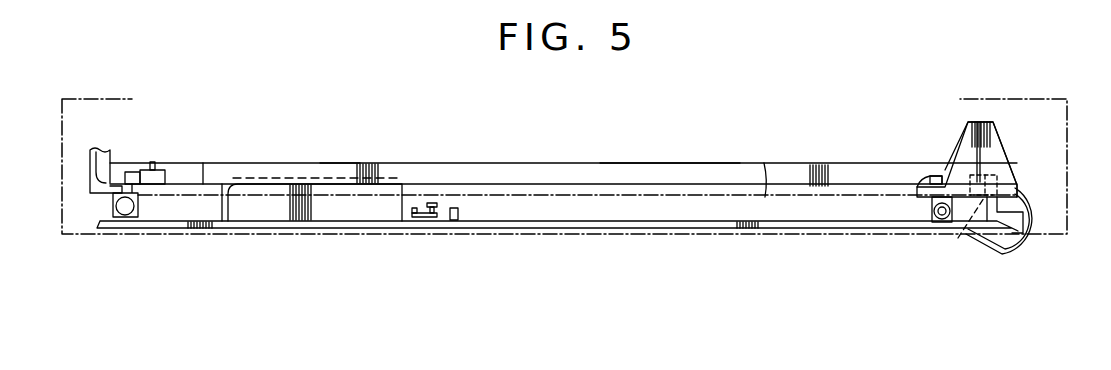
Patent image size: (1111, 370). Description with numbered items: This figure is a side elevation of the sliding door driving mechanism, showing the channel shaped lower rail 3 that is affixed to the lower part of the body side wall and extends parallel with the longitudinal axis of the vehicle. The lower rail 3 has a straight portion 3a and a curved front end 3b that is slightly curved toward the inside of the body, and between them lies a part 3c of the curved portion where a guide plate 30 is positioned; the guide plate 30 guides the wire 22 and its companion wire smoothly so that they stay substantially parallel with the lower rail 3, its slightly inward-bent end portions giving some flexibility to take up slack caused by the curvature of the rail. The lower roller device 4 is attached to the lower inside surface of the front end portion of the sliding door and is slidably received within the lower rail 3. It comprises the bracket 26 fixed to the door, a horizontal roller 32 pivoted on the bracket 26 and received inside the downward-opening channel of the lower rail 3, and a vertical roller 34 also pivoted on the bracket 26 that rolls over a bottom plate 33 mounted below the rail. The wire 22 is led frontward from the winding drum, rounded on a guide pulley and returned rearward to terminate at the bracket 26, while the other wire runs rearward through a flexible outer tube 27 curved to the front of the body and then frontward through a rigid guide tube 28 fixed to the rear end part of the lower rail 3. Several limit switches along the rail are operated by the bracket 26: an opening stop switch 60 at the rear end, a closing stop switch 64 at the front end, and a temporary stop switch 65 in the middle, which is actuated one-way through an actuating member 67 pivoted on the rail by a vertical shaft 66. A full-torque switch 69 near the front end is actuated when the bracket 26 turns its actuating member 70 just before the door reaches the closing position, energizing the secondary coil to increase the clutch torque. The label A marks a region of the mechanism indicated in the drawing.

The lower rail 3 is at (608, 172).
The straight portion 3a is at (670, 172).
The curved front end 3b is at (213, 168).
The part of the curved portion 3c is at (343, 165).
The lower roller device 4 is at (996, 108).
The wire 22 is at (764, 163).
The bracket 26 is at (998, 148).
The flexible outer tube 27 is at (1048, 247).
The rigid guide tube 28 is at (1003, 180).
The guide plate 30 is at (230, 182).
The horizontal roller 32 is at (938, 175).
The bottom plate 33 is at (853, 222).
The vertical roller 34 is at (932, 210).
The opening stop switch 60 is at (960, 193).
The closing stop switch 64 is at (90, 165).
The temporary stop switch 65 is at (452, 210).
The vertical shaft 66 is at (432, 203).
The actuating member 67 is at (417, 213).
The full-torque switch 69 is at (135, 172).
The actuating member 70 is at (162, 170).
The section indicator A is at (555, 158).